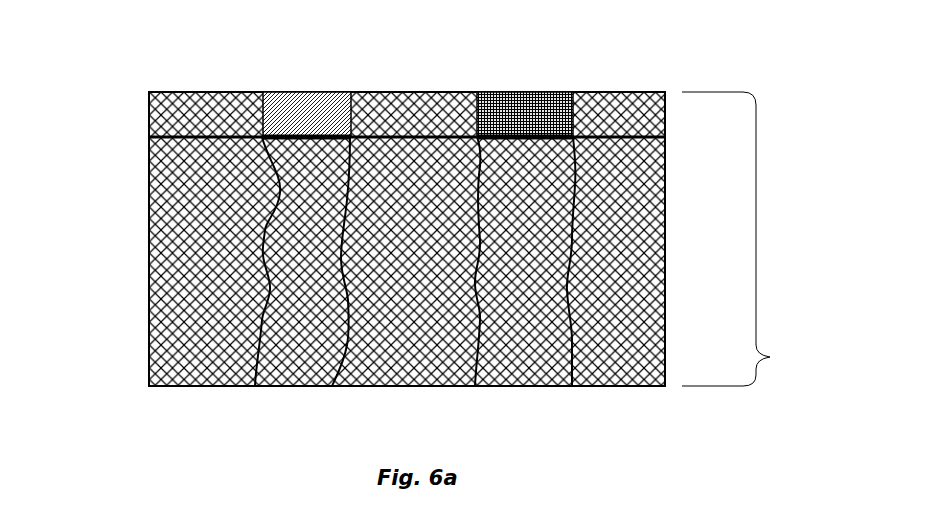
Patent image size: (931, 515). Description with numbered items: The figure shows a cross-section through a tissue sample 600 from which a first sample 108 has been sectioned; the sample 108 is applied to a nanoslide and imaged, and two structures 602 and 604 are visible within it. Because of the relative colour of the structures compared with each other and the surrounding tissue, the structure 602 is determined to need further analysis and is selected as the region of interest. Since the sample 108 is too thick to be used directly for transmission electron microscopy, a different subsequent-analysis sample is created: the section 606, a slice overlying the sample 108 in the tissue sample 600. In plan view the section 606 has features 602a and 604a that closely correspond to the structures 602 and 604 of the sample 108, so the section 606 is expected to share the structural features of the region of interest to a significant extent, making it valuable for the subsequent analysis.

The tissue sample 600 is at (763, 239).
The first sample 108 is at (150, 257).
The section 606 is at (147, 118).
The structure 602 is at (303, 387).
The structure 604 is at (533, 387).
The feature 602a is at (310, 92).
The feature 604a is at (522, 92).